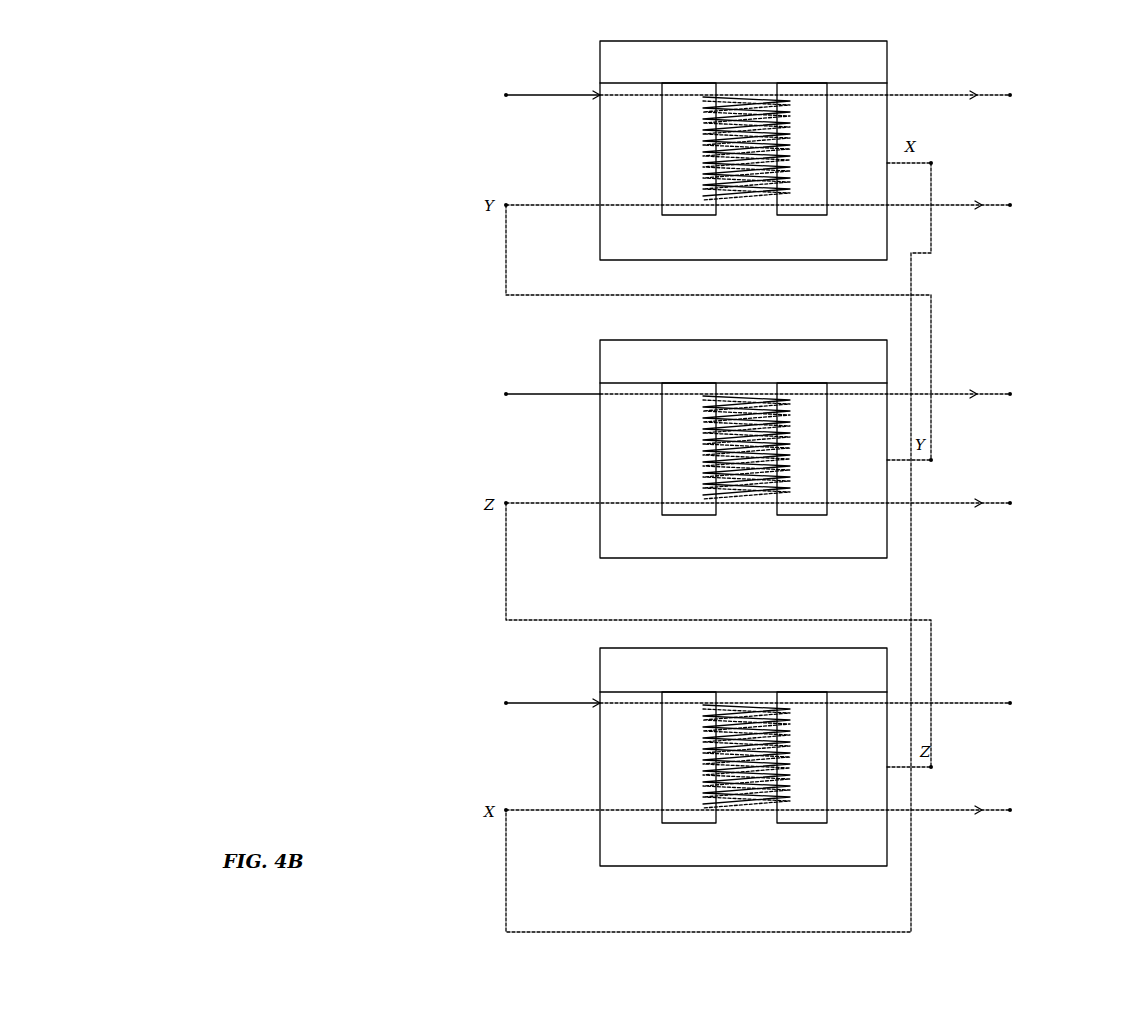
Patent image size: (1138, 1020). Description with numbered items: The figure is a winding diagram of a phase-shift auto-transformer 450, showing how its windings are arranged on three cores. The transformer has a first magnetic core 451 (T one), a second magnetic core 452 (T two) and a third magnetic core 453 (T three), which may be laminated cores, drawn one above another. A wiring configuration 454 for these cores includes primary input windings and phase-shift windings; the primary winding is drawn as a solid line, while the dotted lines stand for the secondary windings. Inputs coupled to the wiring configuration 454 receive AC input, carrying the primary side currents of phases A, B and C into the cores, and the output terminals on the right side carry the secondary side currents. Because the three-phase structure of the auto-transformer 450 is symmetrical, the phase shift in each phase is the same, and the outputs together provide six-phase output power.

The phase-shift auto-transformer 450 is at (357, 126).
The first magnetic core 451 is at (850, 63).
The second magnetic core 452 is at (787, 363).
The third magnetic core 453 is at (787, 685).
The wiring configuration 454 is at (563, 86).